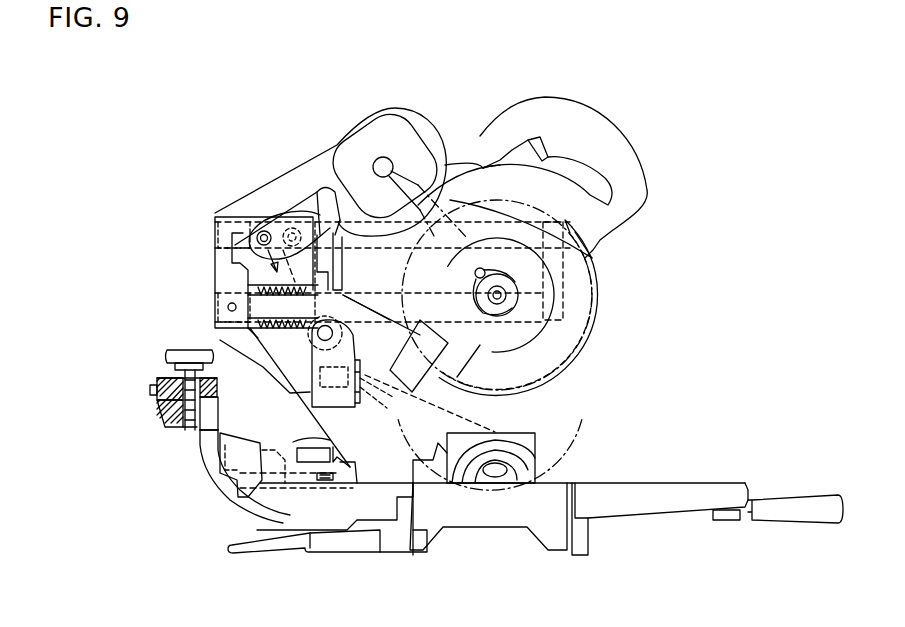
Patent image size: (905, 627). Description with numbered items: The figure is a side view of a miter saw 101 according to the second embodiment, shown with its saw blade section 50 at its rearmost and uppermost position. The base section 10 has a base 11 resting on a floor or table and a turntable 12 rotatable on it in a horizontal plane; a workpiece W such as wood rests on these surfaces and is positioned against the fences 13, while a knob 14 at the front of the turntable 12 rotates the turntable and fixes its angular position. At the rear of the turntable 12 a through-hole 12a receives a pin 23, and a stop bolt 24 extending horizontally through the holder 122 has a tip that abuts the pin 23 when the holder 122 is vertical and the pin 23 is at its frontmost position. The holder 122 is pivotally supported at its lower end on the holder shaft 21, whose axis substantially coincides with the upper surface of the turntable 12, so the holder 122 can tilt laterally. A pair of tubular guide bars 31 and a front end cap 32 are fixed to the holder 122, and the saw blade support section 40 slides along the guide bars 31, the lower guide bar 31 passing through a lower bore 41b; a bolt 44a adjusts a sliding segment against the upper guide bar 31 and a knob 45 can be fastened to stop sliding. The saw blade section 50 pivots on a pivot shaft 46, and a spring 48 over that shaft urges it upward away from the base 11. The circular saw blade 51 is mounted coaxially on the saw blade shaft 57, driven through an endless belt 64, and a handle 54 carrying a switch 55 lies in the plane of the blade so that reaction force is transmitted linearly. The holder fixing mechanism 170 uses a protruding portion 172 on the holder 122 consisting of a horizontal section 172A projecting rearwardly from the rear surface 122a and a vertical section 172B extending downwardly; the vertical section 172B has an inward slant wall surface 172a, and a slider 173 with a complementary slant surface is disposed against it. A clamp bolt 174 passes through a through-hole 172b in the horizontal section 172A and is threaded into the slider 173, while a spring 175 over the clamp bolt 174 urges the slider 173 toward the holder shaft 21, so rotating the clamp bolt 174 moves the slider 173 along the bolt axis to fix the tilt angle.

The miter saw 101 is at (713, 217).
The base section 10 is at (630, 537).
The base 11 is at (543, 517).
The turntable 12 is at (667, 487).
The through-hole 12a is at (218, 485).
The fences 13 is at (432, 463).
The knob 14 is at (788, 505).
The holder shaft 21 is at (290, 546).
The pin 23 is at (215, 478).
The stop bolt 24 is at (242, 472).
The guide bars 31 is at (215, 243).
The front end cap 32 is at (605, 315).
The saw blade support section 40 is at (253, 218).
The lower bore 41b is at (262, 233).
The bolt 44a is at (260, 236).
The knob 45 is at (287, 230).
The pivot shaft 46 is at (323, 238).
The spring 48 is at (307, 358).
The saw blade section 50 is at (445, 168).
The circular saw blade 51 is at (537, 362).
The handle 54 is at (587, 132).
The switch 55 is at (543, 137).
The saw blade shaft 57 is at (540, 292).
The endless belt 64 is at (453, 195).
The holder 122 is at (297, 442).
The rear surface 122a is at (222, 421).
The holder fixing mechanism 170 is at (147, 440).
The protruding portion 172 is at (63, 390).
The horizontal section 172A is at (155, 390).
The vertical section 172B is at (157, 420).
The slant wall surface 172a is at (193, 438).
The through-hole 172b is at (167, 374).
The slider 173 is at (200, 440).
The clamp bolt 174 is at (163, 353).
The spring 175 is at (200, 402).
The workpiece W is at (530, 468).